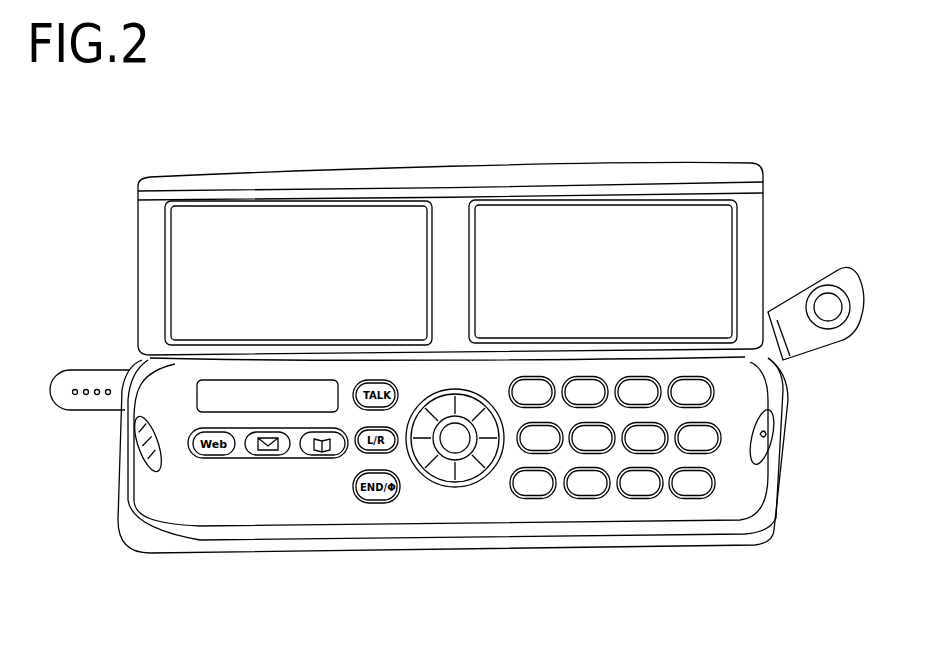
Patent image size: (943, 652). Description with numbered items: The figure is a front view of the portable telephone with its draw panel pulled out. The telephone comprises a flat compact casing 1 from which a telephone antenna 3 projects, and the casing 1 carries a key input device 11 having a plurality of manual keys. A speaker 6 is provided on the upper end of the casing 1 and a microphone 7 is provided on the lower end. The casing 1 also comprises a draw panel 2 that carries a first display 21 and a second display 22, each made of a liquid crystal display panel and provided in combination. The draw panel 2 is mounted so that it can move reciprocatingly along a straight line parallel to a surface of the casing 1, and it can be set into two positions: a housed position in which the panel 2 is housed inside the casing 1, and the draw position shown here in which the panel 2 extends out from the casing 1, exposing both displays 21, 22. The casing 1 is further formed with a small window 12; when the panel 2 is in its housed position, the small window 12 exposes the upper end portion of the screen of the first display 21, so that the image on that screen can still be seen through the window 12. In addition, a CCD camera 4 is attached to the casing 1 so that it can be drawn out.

The casing 1 is at (583, 512).
The draw panel 2 is at (568, 176).
The telephone antenna 3 is at (80, 376).
The CCD camera 4 is at (832, 297).
The speaker 6 is at (150, 456).
The microphone 7 is at (765, 442).
The key input device 11 is at (697, 497).
The small window 12 is at (205, 398).
The first display 21 is at (278, 228).
The second display 22 is at (523, 215).